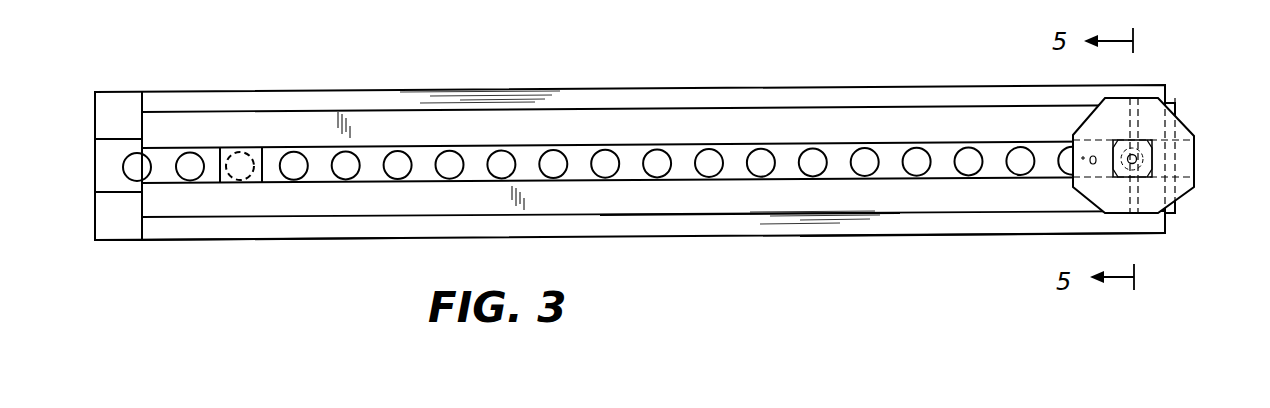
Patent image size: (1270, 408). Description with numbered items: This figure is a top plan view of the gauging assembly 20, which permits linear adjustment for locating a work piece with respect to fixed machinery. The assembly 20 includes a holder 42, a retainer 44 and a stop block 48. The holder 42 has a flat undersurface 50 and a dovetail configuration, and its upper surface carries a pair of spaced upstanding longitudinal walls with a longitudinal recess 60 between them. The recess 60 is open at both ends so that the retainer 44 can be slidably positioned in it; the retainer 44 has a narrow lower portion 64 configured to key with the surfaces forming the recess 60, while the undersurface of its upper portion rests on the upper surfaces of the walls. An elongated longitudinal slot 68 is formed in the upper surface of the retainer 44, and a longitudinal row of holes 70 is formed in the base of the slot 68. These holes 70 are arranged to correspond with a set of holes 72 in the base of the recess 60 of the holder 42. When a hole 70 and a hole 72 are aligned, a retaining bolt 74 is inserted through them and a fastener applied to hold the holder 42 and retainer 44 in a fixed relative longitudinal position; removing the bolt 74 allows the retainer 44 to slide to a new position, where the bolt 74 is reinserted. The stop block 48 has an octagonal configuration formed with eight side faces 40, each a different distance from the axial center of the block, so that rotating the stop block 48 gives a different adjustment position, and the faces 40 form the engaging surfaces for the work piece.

The gauging assembly 20 is at (769, 72).
The side faces 40 is at (1183, 194).
The holder 42 is at (904, 233).
The retainer 44 is at (721, 213).
The stop block 48 is at (1197, 153).
The flat undersurface 50 is at (191, 241).
The longitudinal recess 60 is at (103, 158).
The narrow lower portion 64 is at (100, 245).
The elongated longitudinal slot 68 is at (305, 146).
The holes 70 is at (178, 152).
The holes 72 is at (125, 168).
The retaining bolt 74 is at (247, 182).